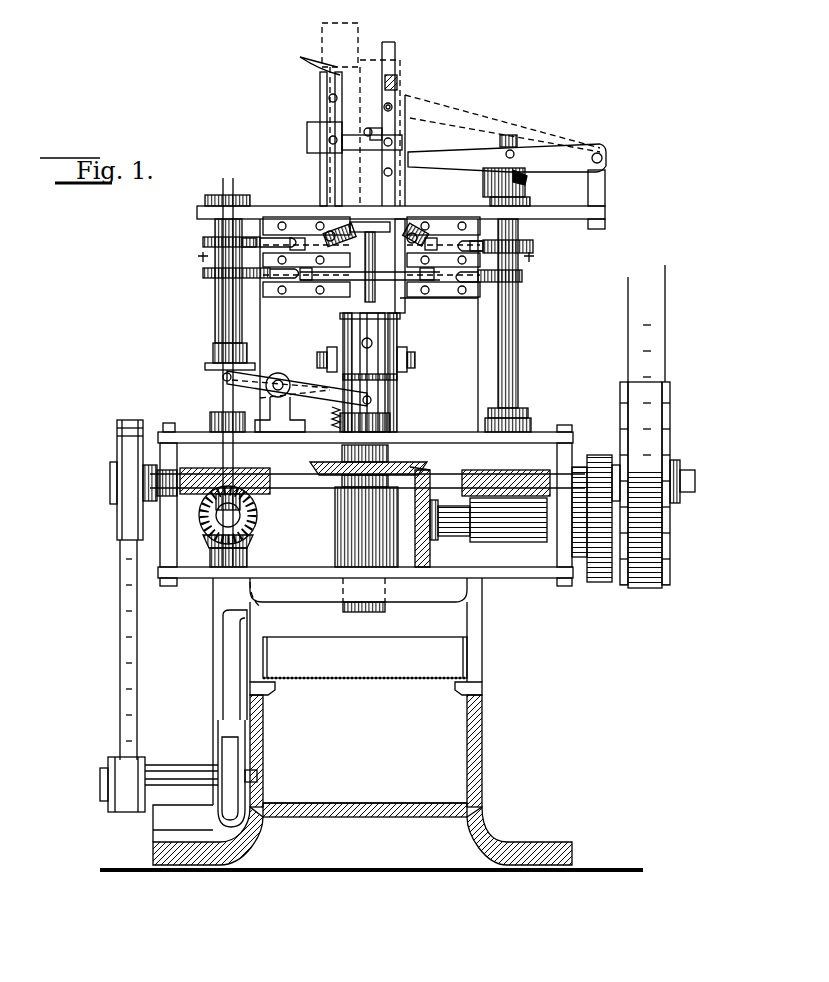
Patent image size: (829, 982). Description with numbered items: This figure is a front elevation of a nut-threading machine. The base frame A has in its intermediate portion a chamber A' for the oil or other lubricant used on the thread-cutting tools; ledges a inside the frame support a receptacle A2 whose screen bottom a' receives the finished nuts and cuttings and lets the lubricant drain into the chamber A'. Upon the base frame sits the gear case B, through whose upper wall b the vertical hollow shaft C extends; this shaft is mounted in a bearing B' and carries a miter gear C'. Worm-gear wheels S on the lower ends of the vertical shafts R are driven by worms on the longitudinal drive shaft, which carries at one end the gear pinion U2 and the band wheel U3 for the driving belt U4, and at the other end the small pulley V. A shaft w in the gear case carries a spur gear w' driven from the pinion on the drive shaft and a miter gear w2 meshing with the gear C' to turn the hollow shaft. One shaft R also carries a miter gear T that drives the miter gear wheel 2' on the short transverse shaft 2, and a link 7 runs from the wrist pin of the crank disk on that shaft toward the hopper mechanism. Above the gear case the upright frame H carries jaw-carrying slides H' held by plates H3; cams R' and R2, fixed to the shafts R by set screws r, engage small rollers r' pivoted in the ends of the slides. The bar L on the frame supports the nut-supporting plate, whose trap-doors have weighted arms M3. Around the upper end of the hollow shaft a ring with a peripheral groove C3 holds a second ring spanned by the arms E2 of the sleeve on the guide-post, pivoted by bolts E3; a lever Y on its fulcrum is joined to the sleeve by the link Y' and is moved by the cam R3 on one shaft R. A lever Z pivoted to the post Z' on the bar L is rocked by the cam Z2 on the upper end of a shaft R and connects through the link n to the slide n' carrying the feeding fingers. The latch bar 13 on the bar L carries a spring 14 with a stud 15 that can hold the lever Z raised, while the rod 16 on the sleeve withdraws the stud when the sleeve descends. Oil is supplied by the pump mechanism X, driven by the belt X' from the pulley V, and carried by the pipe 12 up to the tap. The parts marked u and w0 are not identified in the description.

The base frame A is at (362, 780).
The chamber A' is at (365, 749).
The receptacle A2 is at (365, 657).
The ledges a is at (366, 698).
The screen bottom a' is at (365, 688).
The link 7 is at (213, 600).
The oil conveying pipe 12 is at (225, 655).
The pump mechanism X is at (178, 775).
The belt X' is at (142, 650).
The small pulley V is at (117, 436).
The gear case B is at (365, 592).
The upper wall b is at (186, 430).
The worm-gear wheels S is at (262, 494).
The short transverse shaft 2 is at (218, 519).
The hub u is at (282, 500).
The miter gear wheel 2' is at (260, 372).
The miter gear T is at (248, 543).
The bearing B' is at (352, 521).
The miter gear-wheel C' is at (380, 460).
The vertical hollow shaft C is at (357, 471).
The miter gear w2 is at (438, 575).
The shaft w is at (492, 527).
The spur gear w' is at (593, 543).
The gear pinion U2 is at (599, 455).
The band wheel U3 is at (672, 384).
The driving belt U4 is at (646, 367).
The bar L is at (607, 214).
The vertical shafts R is at (359, 301).
The cam R' is at (358, 241).
The set screws r is at (365, 259).
The cam R2 is at (203, 276).
The small rollers r' is at (367, 272).
The cam R3 is at (213, 362).
The upright frame H is at (370, 324).
The plates H3 is at (331, 291).
The jaw-carrying slides H' is at (364, 234).
The weighted arms M3 is at (330, 230).
The arms E2 is at (327, 351).
The bolts E3 is at (317, 360).
The peripheral groove C3 is at (398, 378).
The link Y' is at (334, 388).
The lever Y is at (280, 402).
The latch bar 13 is at (396, 48).
The spring 14 is at (398, 87).
The stud 15 is at (400, 103).
The rod 16 is at (400, 122).
The link n is at (307, 139).
The slide n' is at (335, 123).
The finger w0 is at (300, 58).
The lever Z is at (505, 133).
The post Z' is at (611, 188).
The cam Z2 is at (530, 178).